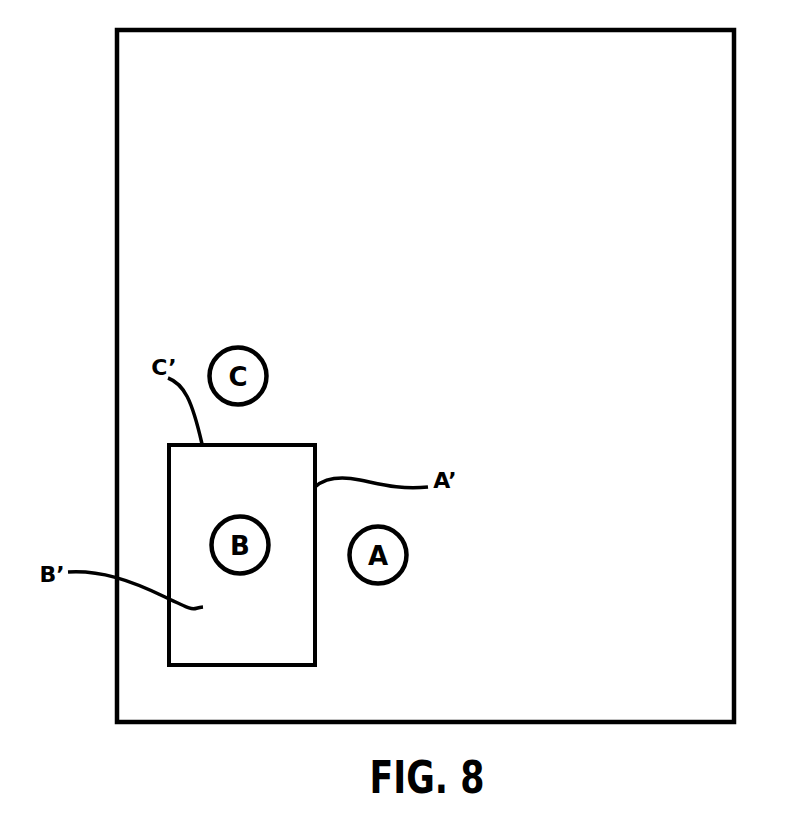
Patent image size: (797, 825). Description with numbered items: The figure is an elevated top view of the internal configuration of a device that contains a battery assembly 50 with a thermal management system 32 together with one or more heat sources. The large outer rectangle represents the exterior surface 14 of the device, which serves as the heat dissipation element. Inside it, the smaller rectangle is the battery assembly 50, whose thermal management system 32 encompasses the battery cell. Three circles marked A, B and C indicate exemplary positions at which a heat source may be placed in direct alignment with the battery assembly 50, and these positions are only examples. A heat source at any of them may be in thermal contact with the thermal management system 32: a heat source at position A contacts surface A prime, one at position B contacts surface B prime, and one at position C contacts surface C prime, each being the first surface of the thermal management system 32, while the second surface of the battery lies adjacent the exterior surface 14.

The exterior surface 14 is at (422, 360).
The thermal management system 32 is at (160, 462).
The battery assembly 50 is at (283, 640).